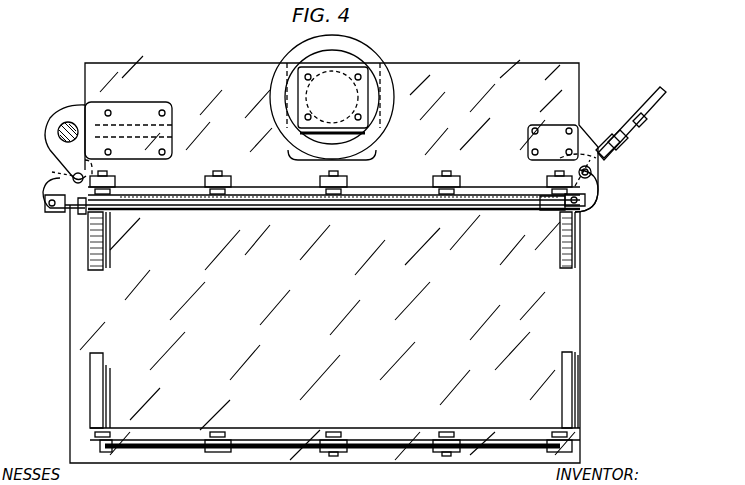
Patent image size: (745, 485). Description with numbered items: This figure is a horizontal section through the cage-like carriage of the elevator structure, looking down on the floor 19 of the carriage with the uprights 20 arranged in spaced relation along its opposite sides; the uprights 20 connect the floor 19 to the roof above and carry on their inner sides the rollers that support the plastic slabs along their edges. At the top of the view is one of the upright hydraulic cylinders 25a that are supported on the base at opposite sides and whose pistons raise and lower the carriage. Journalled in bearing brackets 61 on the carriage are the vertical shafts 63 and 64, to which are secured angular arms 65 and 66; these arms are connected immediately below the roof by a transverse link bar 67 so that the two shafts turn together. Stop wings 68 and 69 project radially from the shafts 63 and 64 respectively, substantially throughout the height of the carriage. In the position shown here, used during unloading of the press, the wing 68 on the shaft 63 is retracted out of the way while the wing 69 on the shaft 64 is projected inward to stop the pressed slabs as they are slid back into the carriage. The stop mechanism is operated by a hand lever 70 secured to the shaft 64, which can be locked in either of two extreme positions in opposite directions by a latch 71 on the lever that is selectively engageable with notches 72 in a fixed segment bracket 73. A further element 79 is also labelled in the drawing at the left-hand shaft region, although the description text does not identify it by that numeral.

The floor 19 is at (334, 259).
The uprights 20 is at (115, 181).
The hydraulic cylinder 25a is at (370, 95).
The bearing bracket 61 is at (150, 107).
The vertical shaft 63 is at (55, 160).
The vertical shaft 64 is at (598, 185).
The angular arm 65 is at (50, 190).
The angular arm 66 is at (588, 214).
The transverse link bar 67 is at (310, 207).
The stop wing 68 is at (52, 172).
The stop wing 69 is at (598, 200).
The hand lever 70 is at (660, 86).
The latch 71 is at (120, 200).
The notches 72 is at (596, 167).
The fixed segment bracket 73 is at (600, 140).
The shaft 79 is at (60, 128).